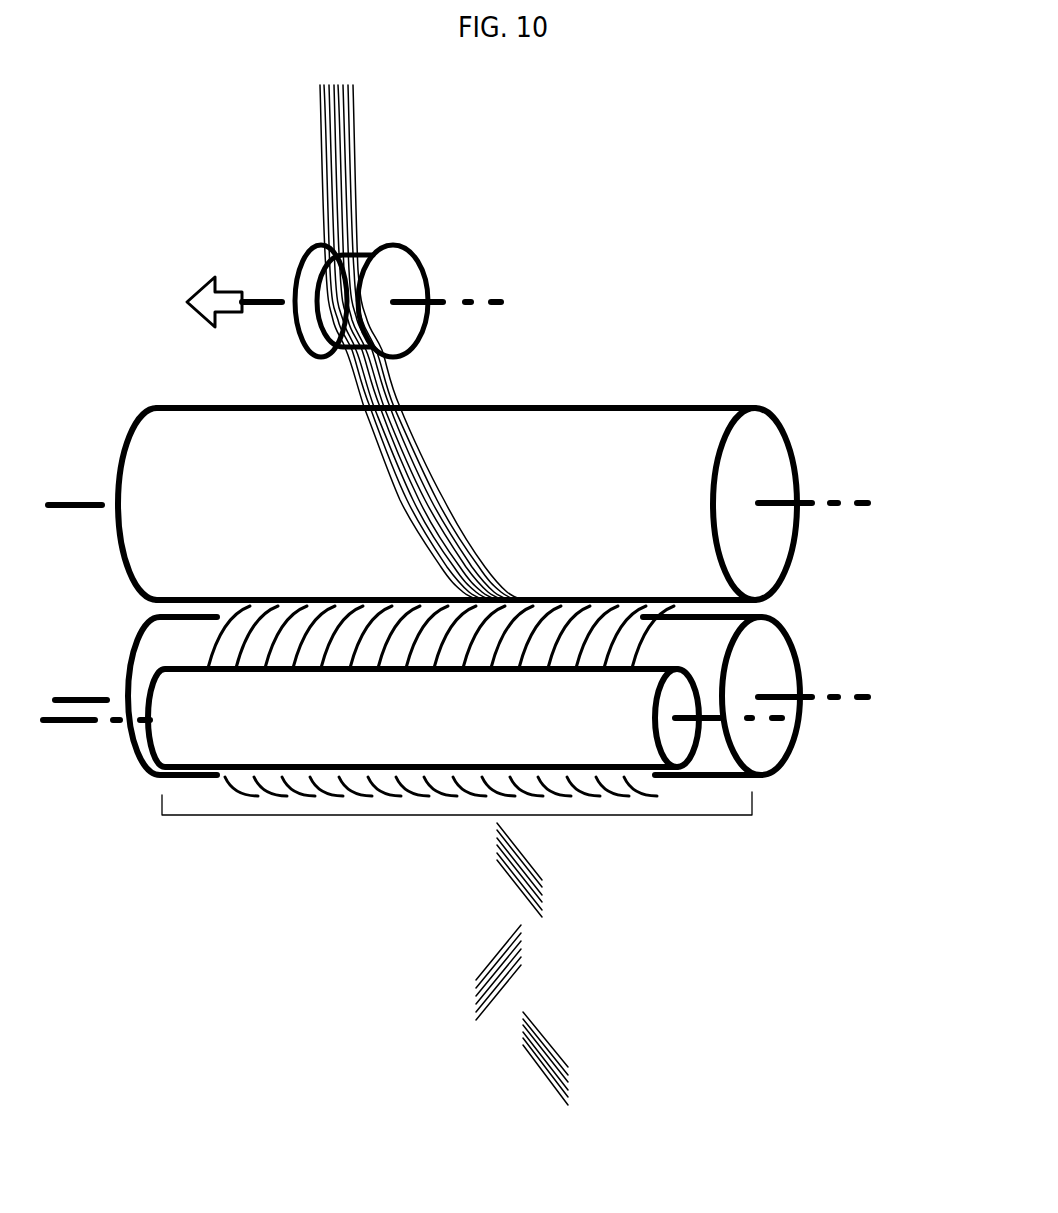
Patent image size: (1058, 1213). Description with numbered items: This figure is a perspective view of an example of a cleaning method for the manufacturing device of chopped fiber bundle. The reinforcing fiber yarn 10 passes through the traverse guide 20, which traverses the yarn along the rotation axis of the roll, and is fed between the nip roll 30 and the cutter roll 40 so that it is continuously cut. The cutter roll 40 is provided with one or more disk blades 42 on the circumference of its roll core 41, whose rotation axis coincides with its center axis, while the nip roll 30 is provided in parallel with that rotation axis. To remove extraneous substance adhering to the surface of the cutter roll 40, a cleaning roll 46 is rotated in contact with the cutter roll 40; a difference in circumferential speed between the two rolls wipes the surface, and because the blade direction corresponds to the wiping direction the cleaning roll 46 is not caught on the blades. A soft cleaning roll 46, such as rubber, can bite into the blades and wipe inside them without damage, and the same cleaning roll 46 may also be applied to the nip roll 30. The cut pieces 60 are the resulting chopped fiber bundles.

The reinforcing fiber yarn 10 is at (320, 165).
The traverse guide 20 is at (403, 283).
The nip roll 30 is at (170, 515).
The cutter roll 40 is at (458, 815).
The roll core 41 is at (760, 667).
The disk blades 42 is at (368, 795).
The cleaning roll 46 is at (617, 748).
The cut fiber segments 60 is at (532, 878).